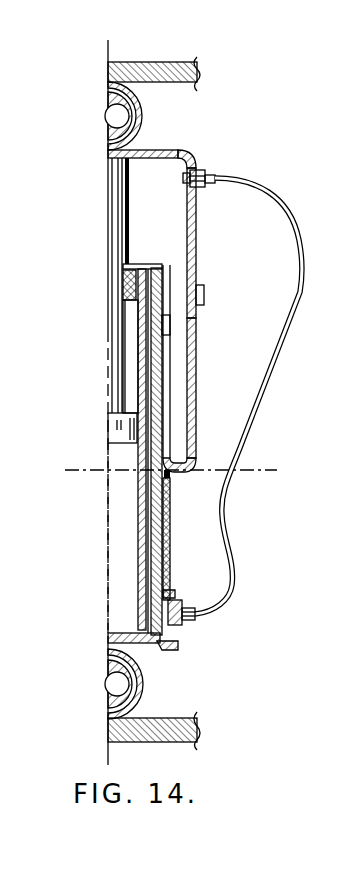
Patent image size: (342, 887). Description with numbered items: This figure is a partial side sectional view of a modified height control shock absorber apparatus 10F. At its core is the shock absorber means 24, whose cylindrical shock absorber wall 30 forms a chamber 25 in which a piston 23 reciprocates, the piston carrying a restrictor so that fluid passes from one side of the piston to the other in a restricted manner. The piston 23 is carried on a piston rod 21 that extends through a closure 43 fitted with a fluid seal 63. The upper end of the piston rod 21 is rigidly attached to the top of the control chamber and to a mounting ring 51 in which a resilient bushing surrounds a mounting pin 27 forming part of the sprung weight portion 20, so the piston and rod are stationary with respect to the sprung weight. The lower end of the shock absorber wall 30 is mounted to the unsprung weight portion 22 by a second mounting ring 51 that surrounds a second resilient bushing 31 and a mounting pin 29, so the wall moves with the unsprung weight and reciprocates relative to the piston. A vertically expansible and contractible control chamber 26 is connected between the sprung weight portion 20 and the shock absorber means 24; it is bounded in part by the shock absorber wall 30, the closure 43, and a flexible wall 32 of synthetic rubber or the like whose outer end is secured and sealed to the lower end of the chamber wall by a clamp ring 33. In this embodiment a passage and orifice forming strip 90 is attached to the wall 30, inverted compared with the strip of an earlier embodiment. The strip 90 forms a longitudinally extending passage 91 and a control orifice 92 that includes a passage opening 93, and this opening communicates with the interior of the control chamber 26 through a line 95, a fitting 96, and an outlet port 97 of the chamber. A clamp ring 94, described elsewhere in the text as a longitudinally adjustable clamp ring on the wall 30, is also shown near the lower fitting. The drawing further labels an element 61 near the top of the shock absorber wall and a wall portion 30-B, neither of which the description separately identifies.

The sprung weight portion 20 is at (195, 60).
The unsprung weight portion 22 is at (193, 738).
The mounting pin 27 is at (113, 108).
The mounting pin 29 is at (112, 688).
The second resilient bushing 31 is at (108, 132).
The mounting ring 51 is at (144, 120).
The height control shock absorber apparatus 10F is at (176, 151).
The fitting 96 is at (207, 172).
The outlet port 97 is at (187, 179).
The piston rod 21 is at (112, 187).
The control chamber 26 is at (180, 204).
The sleeve cap 61 is at (133, 266).
The shock absorber wall 30 is at (160, 285).
The fluid seal 63 is at (126, 290).
The clamp ring 33 is at (168, 325).
The closure 43 is at (136, 318).
The flexible wall 32 is at (197, 360).
The line 95 is at (268, 382).
The piston 23 is at (112, 428).
The control orifice 92 is at (170, 479).
The chamber 25 is at (110, 506).
The longitudinally extending passage 91 is at (167, 530).
The passage and orifice forming strip 90 is at (177, 591).
The sleeve extension 30-B is at (138, 562).
The passage opening 93 is at (193, 612).
The clamp ring 94 is at (190, 630).
The shock absorber means 24 is at (178, 646).